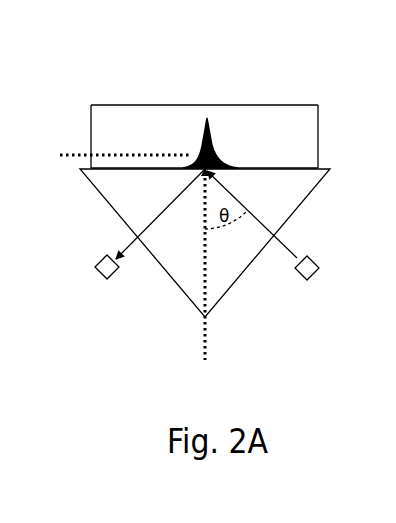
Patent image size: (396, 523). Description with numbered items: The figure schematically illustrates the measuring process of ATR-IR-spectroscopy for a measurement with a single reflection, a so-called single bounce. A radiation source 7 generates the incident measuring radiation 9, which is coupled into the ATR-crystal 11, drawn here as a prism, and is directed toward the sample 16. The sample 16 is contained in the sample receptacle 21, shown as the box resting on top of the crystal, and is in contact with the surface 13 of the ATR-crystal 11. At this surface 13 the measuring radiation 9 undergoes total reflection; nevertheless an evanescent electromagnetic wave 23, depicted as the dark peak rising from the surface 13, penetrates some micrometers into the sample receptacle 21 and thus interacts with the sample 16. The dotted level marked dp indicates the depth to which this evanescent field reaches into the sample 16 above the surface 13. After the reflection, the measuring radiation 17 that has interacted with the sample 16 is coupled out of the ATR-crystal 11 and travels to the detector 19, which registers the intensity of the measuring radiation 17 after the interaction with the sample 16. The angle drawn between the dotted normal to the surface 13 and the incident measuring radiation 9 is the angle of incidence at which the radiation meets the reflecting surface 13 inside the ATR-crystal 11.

The radiation source 7 is at (319, 264).
The measuring radiation 9 is at (284, 246).
The ATR-crystal 11 is at (284, 192).
The surface 13 is at (148, 165).
The sample 16 is at (274, 132).
The measuring radiation 17 is at (156, 216).
The detector 19 is at (100, 260).
The sample receptacle 21 is at (127, 90).
The evanescent electromagnetic wave 23 is at (214, 129).
The penetration depth dp is at (114, 152).